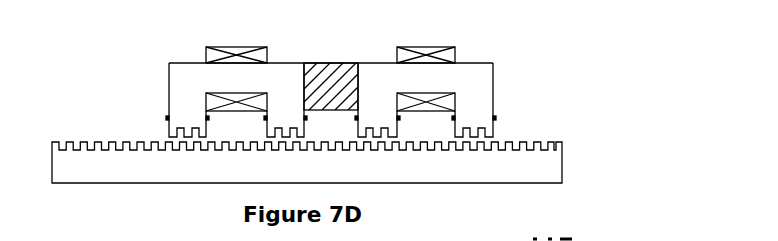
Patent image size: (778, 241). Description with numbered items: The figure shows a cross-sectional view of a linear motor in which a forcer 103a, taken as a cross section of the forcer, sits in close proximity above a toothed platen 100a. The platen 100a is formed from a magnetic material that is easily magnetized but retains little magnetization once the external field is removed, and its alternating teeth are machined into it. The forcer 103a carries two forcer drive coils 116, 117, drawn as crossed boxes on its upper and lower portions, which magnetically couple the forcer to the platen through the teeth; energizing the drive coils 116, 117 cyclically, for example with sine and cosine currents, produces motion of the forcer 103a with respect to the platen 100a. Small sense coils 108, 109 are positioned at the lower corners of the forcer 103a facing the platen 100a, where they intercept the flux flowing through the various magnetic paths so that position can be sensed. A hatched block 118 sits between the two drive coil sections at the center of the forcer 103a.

The platen assembly 100a is at (574, 165).
The forcer 103a is at (505, 57).
The sense coil 108 is at (152, 110).
The sense coil 109 is at (504, 114).
The forcer drive coil 116 is at (264, 40).
The forcer drive coil 117 is at (447, 42).
The hatched core element 118 is at (336, 54).